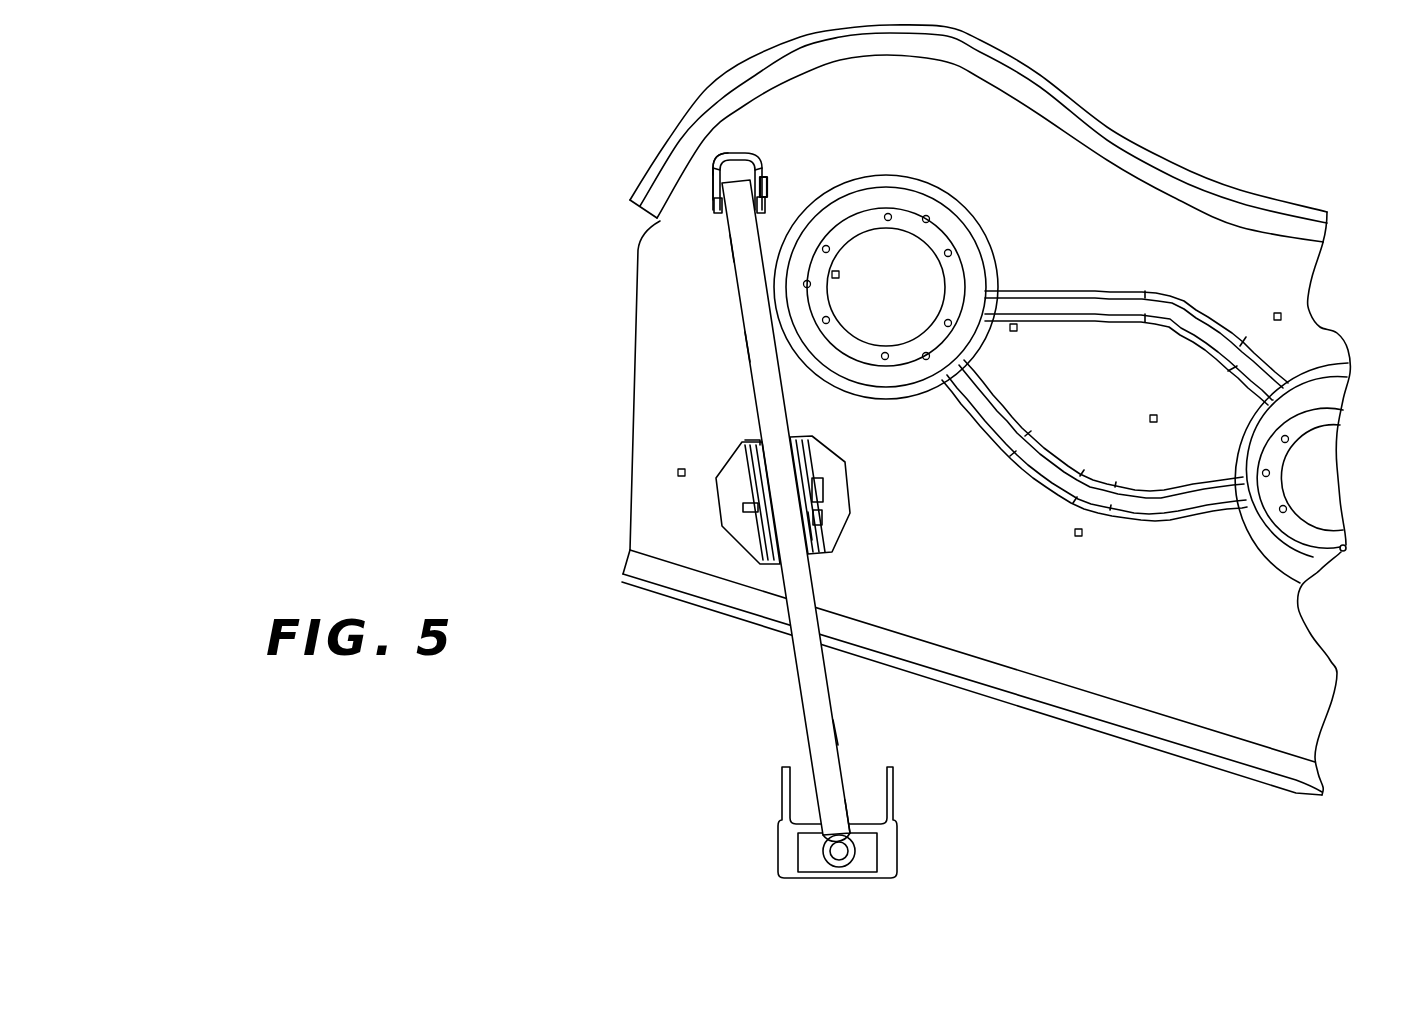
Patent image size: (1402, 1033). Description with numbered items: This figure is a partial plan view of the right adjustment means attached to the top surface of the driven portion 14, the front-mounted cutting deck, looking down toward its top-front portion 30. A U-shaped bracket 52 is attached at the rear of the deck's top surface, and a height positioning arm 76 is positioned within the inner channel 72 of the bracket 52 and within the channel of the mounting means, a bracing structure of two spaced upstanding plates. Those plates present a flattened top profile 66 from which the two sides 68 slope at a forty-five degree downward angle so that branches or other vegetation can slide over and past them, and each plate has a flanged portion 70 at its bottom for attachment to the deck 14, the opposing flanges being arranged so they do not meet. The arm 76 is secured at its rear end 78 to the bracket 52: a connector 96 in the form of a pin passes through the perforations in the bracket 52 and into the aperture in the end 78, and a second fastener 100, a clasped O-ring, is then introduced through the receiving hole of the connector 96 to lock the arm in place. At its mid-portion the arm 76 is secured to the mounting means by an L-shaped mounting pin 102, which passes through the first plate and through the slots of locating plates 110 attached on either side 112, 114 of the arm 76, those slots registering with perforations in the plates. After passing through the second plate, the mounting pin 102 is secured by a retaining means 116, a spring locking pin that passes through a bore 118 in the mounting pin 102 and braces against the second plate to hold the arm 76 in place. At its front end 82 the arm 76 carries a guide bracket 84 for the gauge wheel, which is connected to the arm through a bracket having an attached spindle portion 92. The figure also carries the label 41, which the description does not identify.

The driven portion 14 is at (1113, 180).
The top-front portion 30 is at (1057, 617).
The upper end of brace 41 is at (723, 163).
The U-shaped bracket 52 is at (715, 173).
The flattened top profile 66 is at (808, 512).
The sides 68 is at (800, 455).
The flanged portion 70 is at (732, 467).
The inner channel 72 is at (740, 167).
The height positioning arm 76 is at (788, 660).
The rear end of the arm 78 is at (732, 238).
The front end of the arm 82 is at (838, 817).
The guide bracket 84 is at (785, 843).
The spindle portion 92 is at (841, 853).
The connector 96 is at (717, 207).
The second fastener 100 is at (763, 180).
The mounting pin 102 is at (743, 508).
The locating plates 110 is at (812, 560).
The side of the arm 112 is at (745, 345).
The side of the arm 114 is at (838, 730).
The retaining means 116 is at (813, 518).
The bore 118 is at (818, 495).